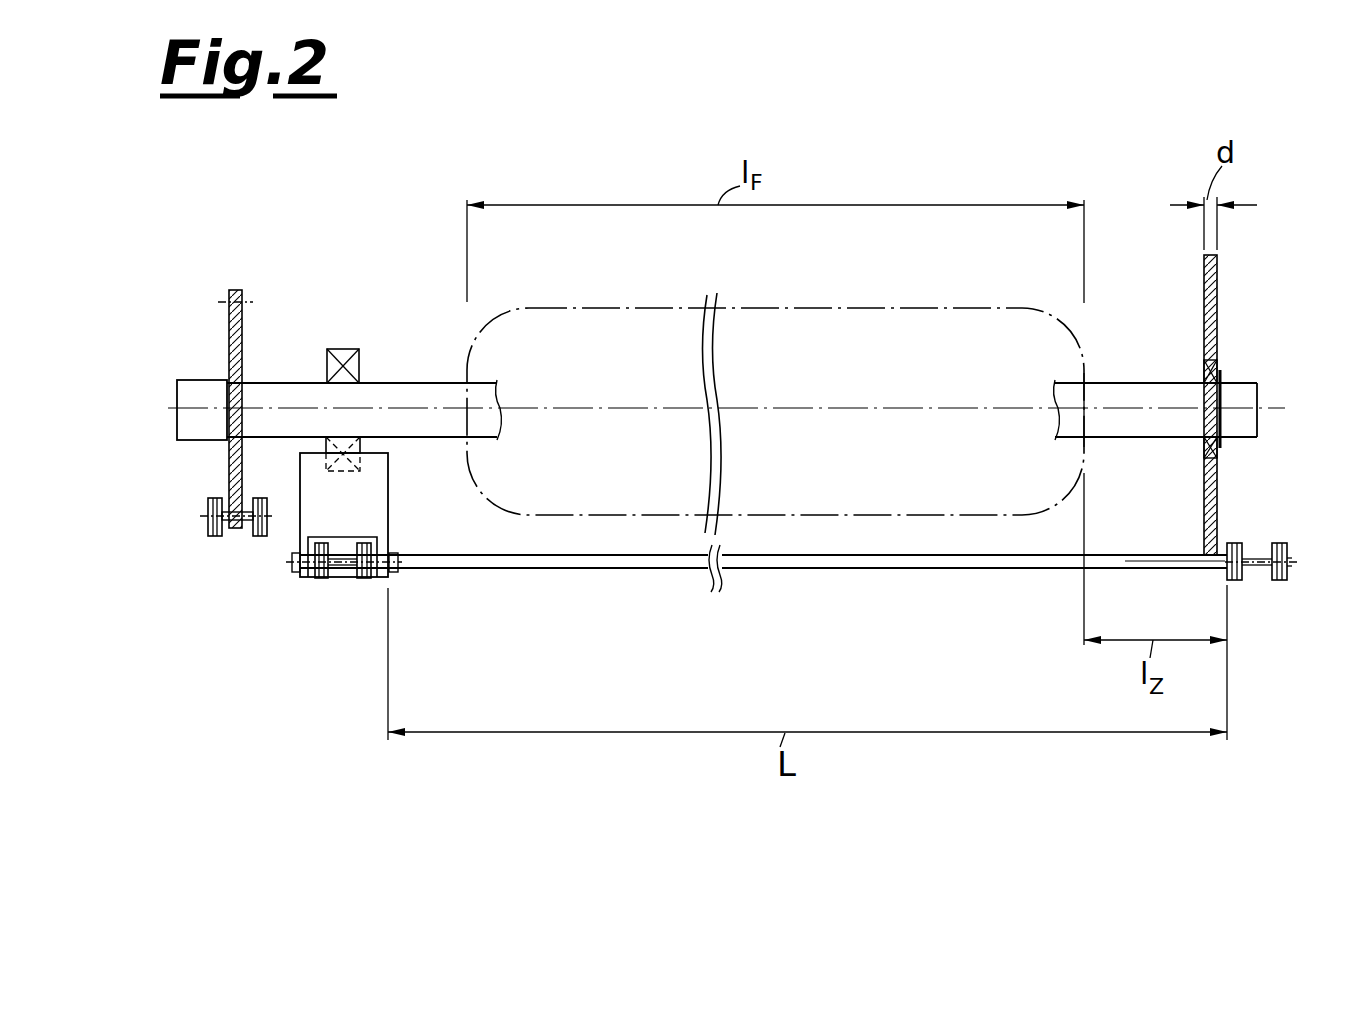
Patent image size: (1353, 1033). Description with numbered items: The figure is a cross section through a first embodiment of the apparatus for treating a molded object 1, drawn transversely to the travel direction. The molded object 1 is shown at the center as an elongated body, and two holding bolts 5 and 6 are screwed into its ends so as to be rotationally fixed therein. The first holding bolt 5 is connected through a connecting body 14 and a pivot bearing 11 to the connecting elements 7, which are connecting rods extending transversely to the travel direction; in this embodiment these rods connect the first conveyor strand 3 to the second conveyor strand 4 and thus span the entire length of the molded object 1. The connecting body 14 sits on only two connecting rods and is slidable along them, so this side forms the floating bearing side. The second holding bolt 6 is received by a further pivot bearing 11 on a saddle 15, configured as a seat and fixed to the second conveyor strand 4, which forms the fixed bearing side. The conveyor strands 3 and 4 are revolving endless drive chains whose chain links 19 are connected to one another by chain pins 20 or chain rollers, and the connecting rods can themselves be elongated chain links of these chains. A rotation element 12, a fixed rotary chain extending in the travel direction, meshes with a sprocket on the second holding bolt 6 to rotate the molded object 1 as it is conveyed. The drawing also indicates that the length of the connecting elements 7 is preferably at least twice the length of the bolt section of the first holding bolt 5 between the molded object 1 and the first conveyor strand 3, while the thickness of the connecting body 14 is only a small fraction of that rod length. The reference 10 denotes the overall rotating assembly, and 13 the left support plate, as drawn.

The molded object 1 is at (860, 308).
The first conveyor strand 3 is at (1258, 624).
The second conveyor strand 4 is at (342, 616).
The first holding bolt 5 is at (1161, 368).
The second holding bolt 6 is at (274, 370).
The connecting element 7 is at (990, 565).
The rotating device 10 is at (162, 475).
The pivot bearing 11 is at (344, 349).
The rotation element 12 is at (214, 566).
The left support plate 13 is at (232, 328).
The connecting body 14 is at (1212, 293).
The saddle 15 is at (388, 501).
The chain link 19 is at (328, 582).
The chain pin 20 is at (341, 578).